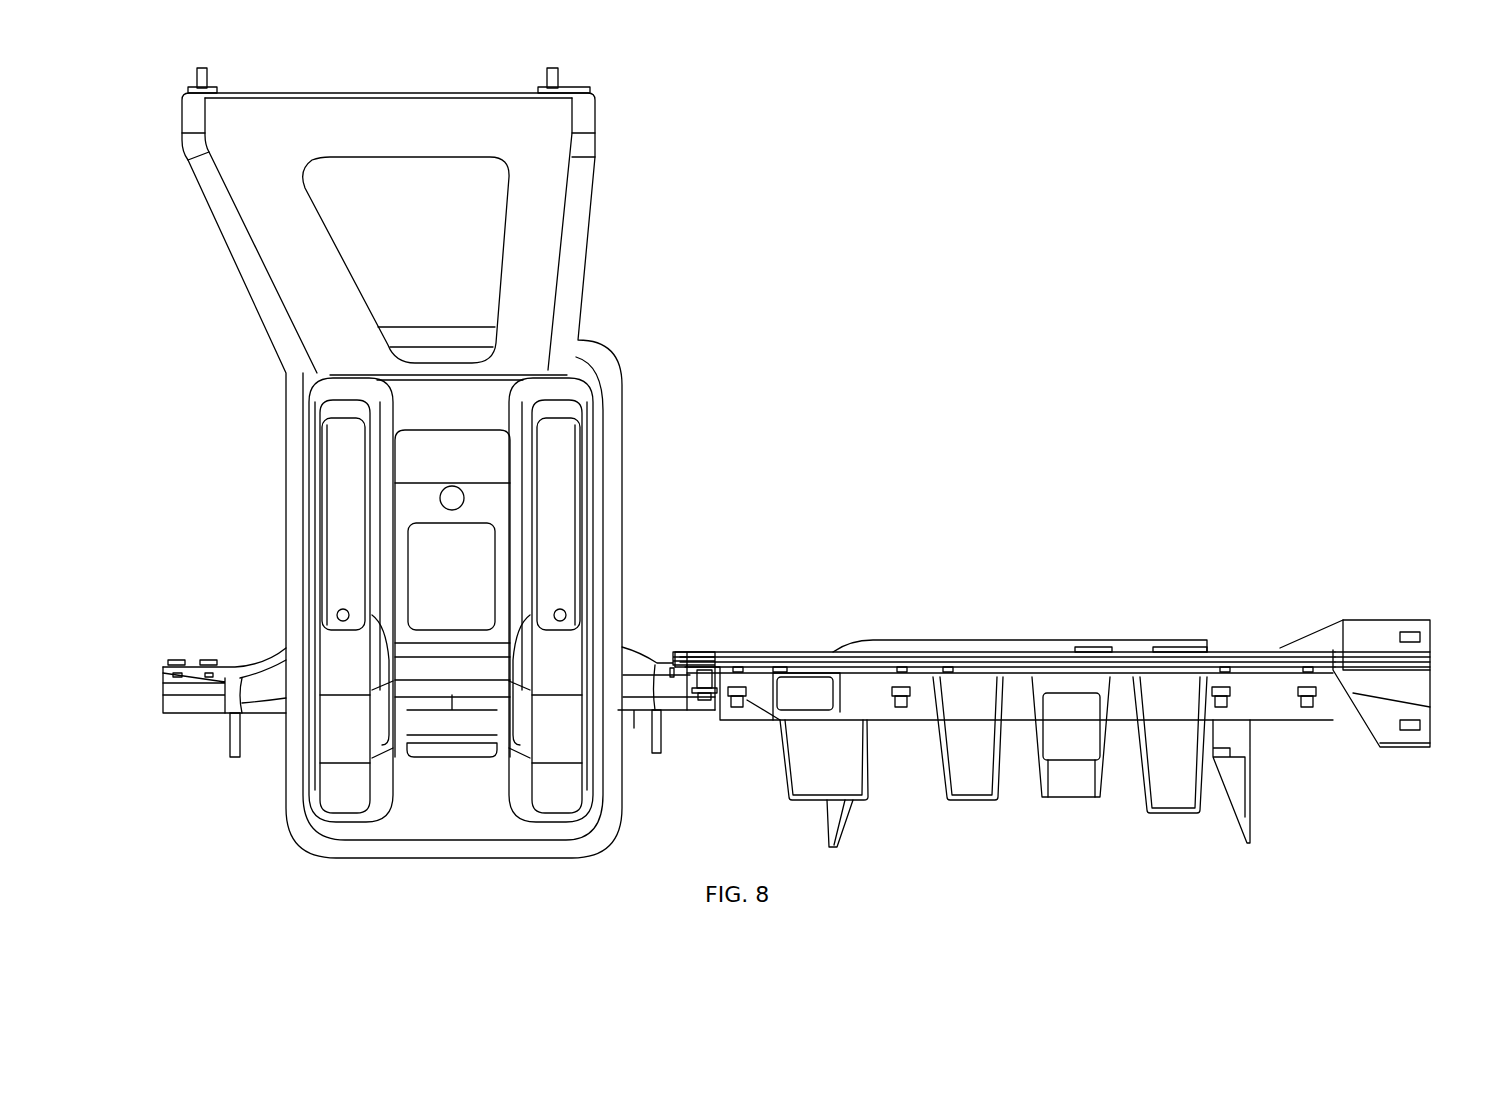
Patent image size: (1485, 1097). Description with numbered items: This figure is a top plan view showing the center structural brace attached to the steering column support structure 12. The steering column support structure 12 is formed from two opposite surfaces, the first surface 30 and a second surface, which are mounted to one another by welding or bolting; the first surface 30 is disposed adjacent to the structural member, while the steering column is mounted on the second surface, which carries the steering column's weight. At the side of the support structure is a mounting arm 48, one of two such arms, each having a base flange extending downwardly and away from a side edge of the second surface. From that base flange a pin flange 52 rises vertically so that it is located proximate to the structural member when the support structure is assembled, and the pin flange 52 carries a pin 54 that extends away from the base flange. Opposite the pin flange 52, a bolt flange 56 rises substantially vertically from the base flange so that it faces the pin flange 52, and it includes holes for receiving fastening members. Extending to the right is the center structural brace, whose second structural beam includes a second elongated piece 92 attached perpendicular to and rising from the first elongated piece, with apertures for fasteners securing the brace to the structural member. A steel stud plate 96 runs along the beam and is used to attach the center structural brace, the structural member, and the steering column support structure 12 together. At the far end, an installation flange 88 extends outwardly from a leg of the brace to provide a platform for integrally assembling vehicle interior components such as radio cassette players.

The steering column support structure 12 is at (612, 347).
The first surface 30 is at (277, 713).
The mounting arm 48 is at (663, 655).
The pin flange 52 is at (635, 718).
The pin 54 is at (661, 723).
The bolt flange 56 is at (623, 648).
The installation flange 88 is at (1427, 688).
The second elongated piece 92 is at (1078, 683).
The stud plate 96 is at (1025, 655).